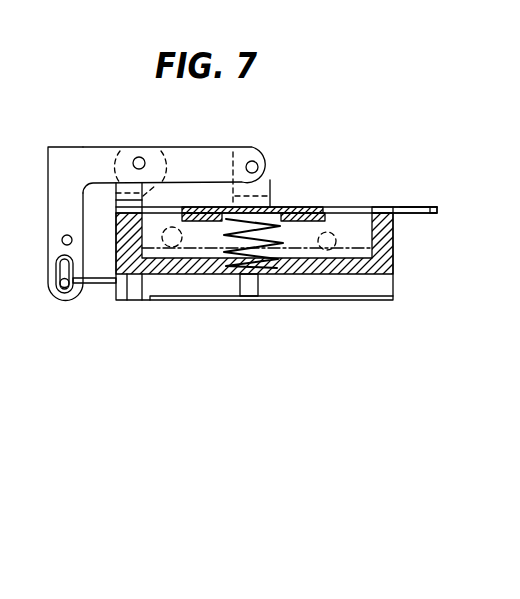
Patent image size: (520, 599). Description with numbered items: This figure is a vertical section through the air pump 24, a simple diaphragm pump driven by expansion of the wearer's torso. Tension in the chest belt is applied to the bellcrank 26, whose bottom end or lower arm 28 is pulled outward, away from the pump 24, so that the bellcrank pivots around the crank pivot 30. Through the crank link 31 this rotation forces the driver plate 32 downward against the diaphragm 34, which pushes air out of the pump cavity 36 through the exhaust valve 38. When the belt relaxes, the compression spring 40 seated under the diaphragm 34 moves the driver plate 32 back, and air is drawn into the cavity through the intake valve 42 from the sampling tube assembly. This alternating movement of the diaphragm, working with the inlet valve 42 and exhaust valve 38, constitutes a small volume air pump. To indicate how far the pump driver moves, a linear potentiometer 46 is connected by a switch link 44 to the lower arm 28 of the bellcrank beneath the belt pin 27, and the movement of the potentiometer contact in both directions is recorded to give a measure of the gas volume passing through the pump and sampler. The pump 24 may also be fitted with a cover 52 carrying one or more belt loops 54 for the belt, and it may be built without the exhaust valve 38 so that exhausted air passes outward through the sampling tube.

The air pump 24 is at (397, 247).
The bellcrank 26 is at (196, 150).
The belt pin 27 is at (67, 235).
The bottom end of bellcrank lever 28 is at (52, 236).
The crank pivot 30 is at (138, 157).
The crank link 31 is at (259, 160).
The driver plate 32 is at (316, 205).
The diaphragm 34 is at (372, 207).
The pump cavity 36 is at (322, 213).
The exhaust valve 38 is at (383, 228).
The compression spring 40 is at (277, 268).
The intake valve 42 is at (162, 241).
The switch link 44 is at (56, 286).
The linear potentiometer 46 is at (197, 290).
The cover 52 is at (437, 211).
The belt loops 54 is at (409, 208).